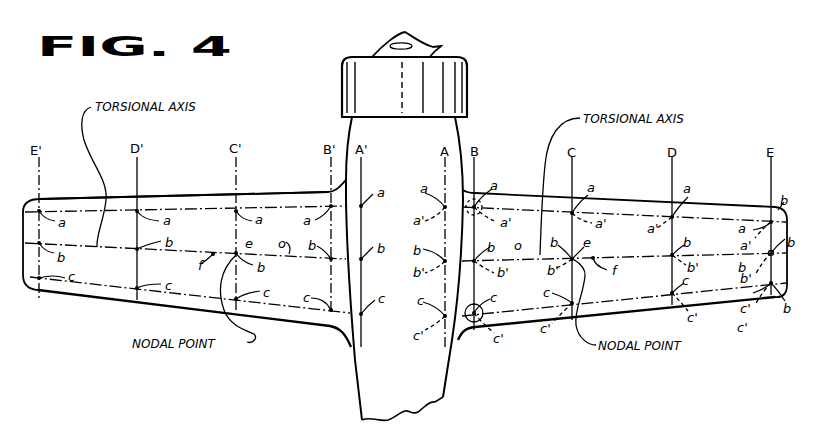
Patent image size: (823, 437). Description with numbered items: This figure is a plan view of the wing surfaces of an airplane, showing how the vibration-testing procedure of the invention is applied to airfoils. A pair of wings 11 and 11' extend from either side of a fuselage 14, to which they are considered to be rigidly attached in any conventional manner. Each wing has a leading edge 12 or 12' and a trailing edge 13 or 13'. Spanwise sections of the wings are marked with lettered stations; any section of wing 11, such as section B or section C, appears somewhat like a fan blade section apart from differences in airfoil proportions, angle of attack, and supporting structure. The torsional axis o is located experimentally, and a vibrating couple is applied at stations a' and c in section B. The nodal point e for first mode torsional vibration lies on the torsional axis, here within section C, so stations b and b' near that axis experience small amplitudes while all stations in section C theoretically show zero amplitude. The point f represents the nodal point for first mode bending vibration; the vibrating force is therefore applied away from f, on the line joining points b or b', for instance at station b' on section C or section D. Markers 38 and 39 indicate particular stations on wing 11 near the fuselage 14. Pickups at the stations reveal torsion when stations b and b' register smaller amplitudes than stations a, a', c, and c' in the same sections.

The wing 11 is at (624, 201).
The wing 11' is at (185, 198).
The leading edge 12 is at (625, 202).
The leading edge 12' is at (184, 184).
The trailing edge 13 is at (616, 318).
The trailing edge 13' is at (194, 318).
The fuselage 14 is at (447, 132).
The nodal point marker 38 is at (472, 323).
The reference point marker 39 is at (489, 199).